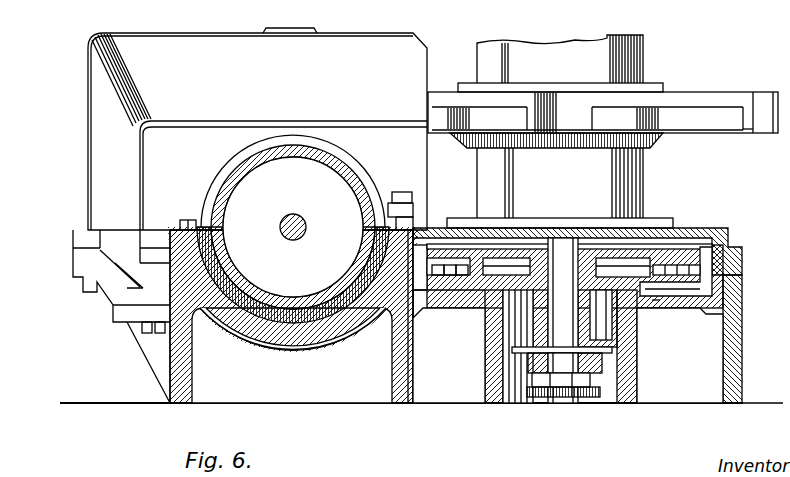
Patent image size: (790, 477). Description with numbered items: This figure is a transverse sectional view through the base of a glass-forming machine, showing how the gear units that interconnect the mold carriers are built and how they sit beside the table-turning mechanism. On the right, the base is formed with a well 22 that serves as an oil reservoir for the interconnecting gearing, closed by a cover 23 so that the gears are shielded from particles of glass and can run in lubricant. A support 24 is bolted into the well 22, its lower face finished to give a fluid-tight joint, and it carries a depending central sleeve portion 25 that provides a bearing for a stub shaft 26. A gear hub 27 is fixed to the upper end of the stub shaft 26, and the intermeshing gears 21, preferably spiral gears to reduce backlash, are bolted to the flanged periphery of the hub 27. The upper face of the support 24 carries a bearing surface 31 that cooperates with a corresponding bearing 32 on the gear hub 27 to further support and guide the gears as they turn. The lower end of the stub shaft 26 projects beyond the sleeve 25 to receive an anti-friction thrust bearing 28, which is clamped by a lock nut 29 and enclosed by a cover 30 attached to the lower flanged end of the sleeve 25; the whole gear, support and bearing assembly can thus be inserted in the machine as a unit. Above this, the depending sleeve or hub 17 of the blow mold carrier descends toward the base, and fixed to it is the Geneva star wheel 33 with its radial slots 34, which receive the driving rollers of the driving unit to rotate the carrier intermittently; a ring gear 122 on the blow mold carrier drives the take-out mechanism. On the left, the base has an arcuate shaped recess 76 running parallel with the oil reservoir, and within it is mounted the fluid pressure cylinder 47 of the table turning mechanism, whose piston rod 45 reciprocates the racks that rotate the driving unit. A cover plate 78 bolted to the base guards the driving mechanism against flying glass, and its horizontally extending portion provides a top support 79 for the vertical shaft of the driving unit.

The cover plate 78 is at (87, 80).
The top support 79 is at (309, 28).
The fluid pressure cylinder 47 is at (357, 176).
The piston rod 45 is at (299, 218).
The arcuate shaped recess 76 is at (258, 318).
The radial slots 34 is at (760, 97).
The Geneva star wheel 33 is at (744, 134).
The ring gear 122 is at (659, 145).
The depending sleeve or hub 17 is at (615, 191).
The gear hub 27 is at (505, 251).
The bearing 32 is at (658, 262).
The cover 23 is at (718, 233).
The intermeshing gears 21 is at (722, 254).
The support 24 is at (705, 281).
The well 22 is at (741, 296).
The depending central sleeve portion 25 is at (530, 328).
The stub shaft 26 is at (543, 332).
The bearing surface 31 is at (653, 302).
The anti-friction thrust bearing 28 is at (603, 366).
The lock nut 29 is at (526, 399).
The cover 30 is at (563, 399).